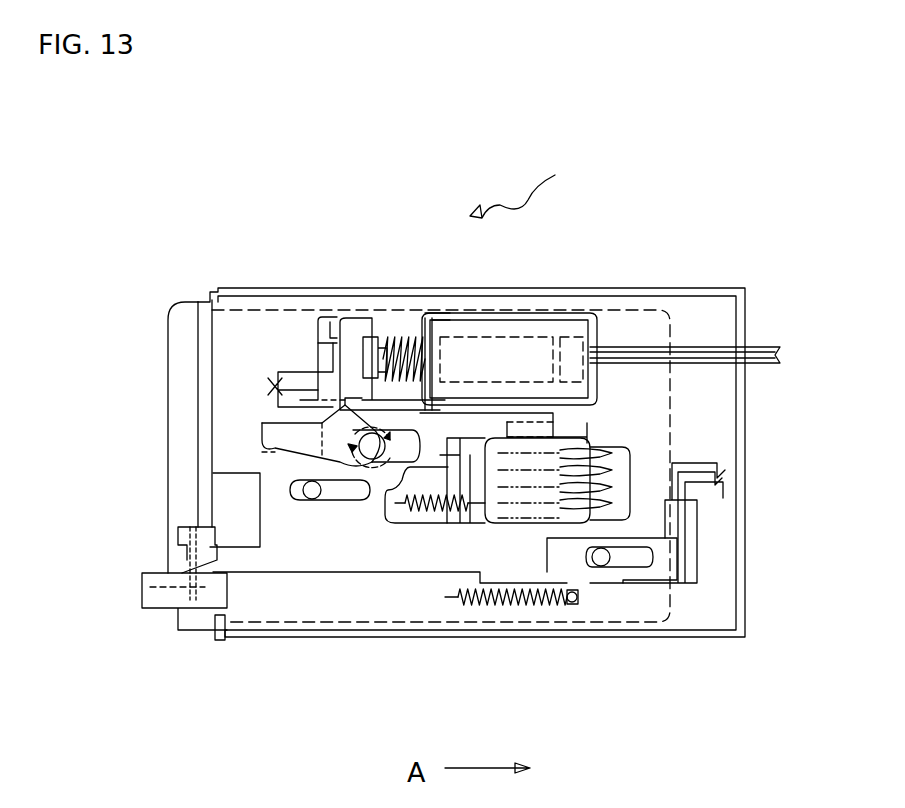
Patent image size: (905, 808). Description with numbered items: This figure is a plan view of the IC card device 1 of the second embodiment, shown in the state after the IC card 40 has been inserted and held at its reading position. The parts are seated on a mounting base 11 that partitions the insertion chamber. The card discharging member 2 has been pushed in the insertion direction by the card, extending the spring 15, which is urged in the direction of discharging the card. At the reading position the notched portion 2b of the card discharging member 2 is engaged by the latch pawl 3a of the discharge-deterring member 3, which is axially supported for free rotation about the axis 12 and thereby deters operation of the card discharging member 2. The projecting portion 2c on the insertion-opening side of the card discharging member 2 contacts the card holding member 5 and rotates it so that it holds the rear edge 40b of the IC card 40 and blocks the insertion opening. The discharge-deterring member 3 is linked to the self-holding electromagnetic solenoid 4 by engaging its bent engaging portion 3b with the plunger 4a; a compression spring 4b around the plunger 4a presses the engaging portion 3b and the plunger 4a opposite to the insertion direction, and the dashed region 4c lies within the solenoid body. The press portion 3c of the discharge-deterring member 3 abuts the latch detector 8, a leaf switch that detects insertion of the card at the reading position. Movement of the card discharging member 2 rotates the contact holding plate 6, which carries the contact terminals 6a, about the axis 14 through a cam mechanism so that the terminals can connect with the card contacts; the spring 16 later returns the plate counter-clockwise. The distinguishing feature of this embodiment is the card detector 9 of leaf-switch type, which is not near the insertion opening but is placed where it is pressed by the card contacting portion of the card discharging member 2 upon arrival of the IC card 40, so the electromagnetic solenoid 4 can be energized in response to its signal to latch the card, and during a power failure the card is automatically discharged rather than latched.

The IC card device 1 is at (521, 184).
The card discharging member 2 is at (570, 575).
The notched portion 2b is at (300, 455).
The projecting portion 2c is at (195, 560).
The discharge-deterring member 3 is at (347, 318).
The latch pawl 3a is at (262, 423).
The engaging portion 3b is at (368, 330).
The press portion 3c is at (330, 318).
The electromagnetic solenoid 4 is at (478, 320).
The plunger 4a is at (395, 340).
The compression spring 4b is at (413, 345).
The coil core 4c is at (572, 345).
The card holding member 5 is at (163, 608).
The contact holding plate 6 is at (595, 440).
The contact terminals 6a is at (600, 455).
The latch detector 8 is at (335, 330).
The card detector 9 is at (715, 468).
The mounting base 11 is at (725, 565).
The axis 12 is at (375, 457).
The axis 14 is at (472, 523).
The spring 15 is at (515, 603).
The spring 16 is at (412, 523).
The IC card 40 is at (172, 330).
The rear edge 40b is at (212, 447).